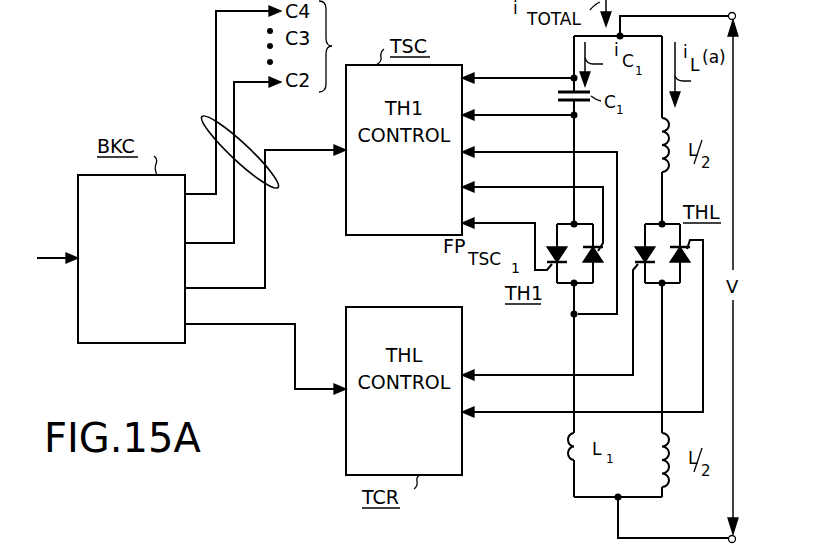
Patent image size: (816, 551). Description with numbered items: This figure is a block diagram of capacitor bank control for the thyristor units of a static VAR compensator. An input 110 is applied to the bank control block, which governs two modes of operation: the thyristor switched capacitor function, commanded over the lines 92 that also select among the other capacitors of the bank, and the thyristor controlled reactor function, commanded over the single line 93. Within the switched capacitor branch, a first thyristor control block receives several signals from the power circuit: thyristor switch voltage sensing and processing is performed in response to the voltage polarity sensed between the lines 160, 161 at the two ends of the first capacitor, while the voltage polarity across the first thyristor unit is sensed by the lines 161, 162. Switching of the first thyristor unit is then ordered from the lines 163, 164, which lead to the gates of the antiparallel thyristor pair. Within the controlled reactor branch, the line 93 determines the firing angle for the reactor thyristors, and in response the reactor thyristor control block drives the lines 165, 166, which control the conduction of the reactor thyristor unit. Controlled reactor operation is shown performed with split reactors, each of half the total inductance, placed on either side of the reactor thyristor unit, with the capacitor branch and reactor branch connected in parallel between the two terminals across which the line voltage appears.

The lines 92 is at (206, 120).
The line 93 is at (295, 345).
The input signal to BKC 110 is at (50, 258).
The line 160 is at (497, 78).
The line 161 is at (500, 115).
The line 162 is at (497, 152).
The line 163 is at (497, 187).
The line 164 is at (497, 223).
The line 165 is at (497, 375).
The line 166 is at (497, 412).